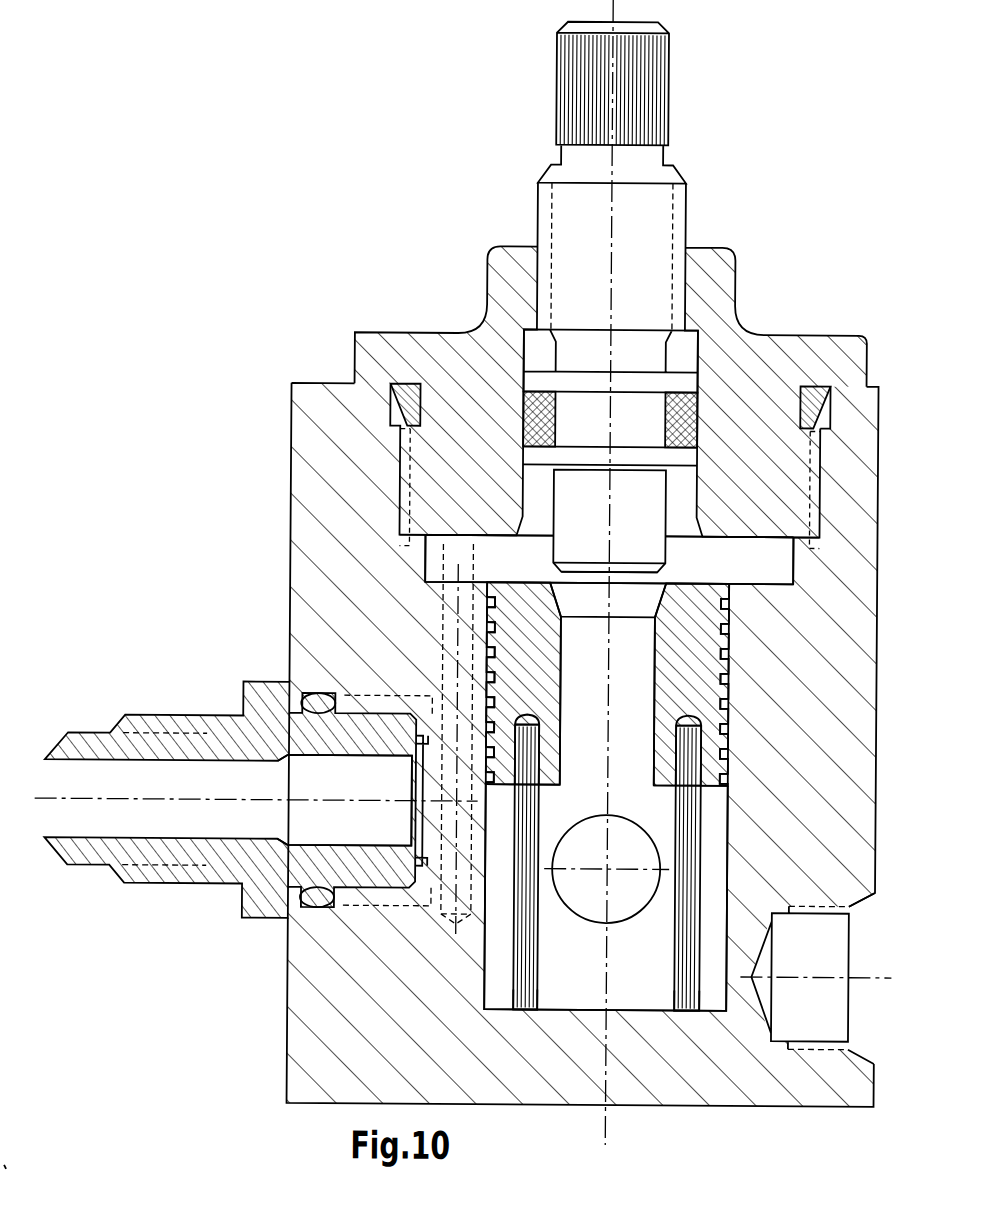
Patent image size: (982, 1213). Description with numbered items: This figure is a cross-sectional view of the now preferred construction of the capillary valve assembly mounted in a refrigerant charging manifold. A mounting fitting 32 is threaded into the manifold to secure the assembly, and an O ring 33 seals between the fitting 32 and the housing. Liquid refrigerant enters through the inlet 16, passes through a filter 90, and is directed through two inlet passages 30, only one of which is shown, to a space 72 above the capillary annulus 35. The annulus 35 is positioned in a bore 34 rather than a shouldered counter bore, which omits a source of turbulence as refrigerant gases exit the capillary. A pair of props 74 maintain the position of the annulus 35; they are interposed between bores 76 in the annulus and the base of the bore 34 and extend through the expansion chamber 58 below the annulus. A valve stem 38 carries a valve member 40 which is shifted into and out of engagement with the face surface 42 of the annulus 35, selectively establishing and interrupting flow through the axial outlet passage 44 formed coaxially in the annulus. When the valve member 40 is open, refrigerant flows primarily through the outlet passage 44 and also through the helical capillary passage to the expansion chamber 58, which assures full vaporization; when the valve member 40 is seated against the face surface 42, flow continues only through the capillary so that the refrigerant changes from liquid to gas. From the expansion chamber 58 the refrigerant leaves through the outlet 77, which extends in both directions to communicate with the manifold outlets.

The inlet 16 is at (88, 851).
The inlet passages 30 is at (440, 640).
The mounting fitting 32 is at (417, 352).
The O ring 33 is at (403, 390).
The bore 34 is at (726, 700).
The capillary annulus 35 is at (688, 650).
The valve stem 38 is at (610, 548).
The valve member 40 is at (648, 548).
The face surface 42 is at (558, 592).
The outlet passage 44 is at (626, 673).
The expansion chamber 58 is at (654, 958).
The space 72 is at (767, 569).
The props 74 is at (677, 984).
The bores 76 is at (532, 758).
The outlet 77 is at (645, 903).
The filter 90 is at (370, 842).